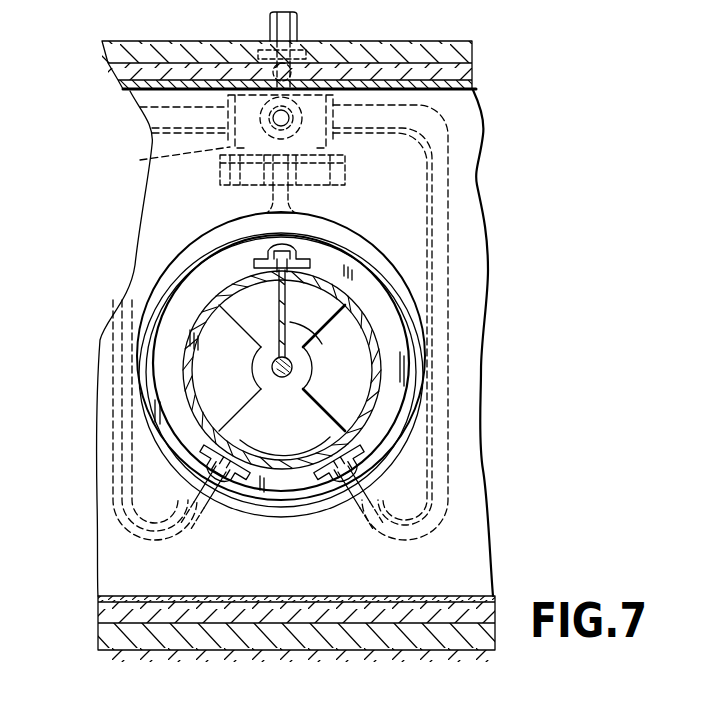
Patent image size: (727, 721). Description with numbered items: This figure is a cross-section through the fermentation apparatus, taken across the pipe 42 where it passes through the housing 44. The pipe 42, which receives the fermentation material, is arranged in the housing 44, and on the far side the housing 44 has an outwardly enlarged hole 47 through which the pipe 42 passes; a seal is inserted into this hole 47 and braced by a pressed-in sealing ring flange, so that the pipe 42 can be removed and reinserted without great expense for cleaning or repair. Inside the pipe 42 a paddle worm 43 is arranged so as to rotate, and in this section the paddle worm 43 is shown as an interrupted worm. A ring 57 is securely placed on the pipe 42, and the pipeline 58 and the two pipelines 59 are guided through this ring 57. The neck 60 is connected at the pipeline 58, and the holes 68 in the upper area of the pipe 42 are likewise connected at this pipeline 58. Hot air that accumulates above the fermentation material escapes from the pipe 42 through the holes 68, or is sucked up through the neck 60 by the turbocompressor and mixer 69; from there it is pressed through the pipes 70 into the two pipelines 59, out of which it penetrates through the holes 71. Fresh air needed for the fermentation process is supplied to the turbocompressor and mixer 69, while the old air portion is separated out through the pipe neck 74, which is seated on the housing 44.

The pipe 42 is at (358, 306).
The paddle worm 43 is at (315, 343).
The housing 44 is at (474, 42).
The outwardly enlarged hole 47 is at (213, 239).
The ring 57 is at (398, 398).
The pipeline 58 is at (250, 264).
The pipelines 59 is at (350, 462).
The neck 60 is at (305, 213).
The holes 68 is at (275, 287).
The turbocompressor and mixer 69 is at (147, 161).
The pipes 70 is at (450, 179).
The holes 71 is at (258, 436).
The pipe neck 74 is at (275, 23).